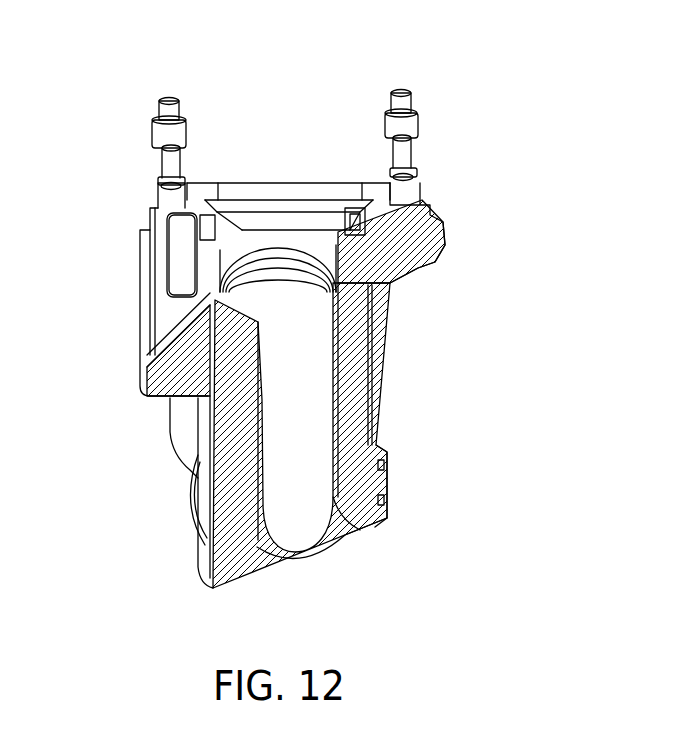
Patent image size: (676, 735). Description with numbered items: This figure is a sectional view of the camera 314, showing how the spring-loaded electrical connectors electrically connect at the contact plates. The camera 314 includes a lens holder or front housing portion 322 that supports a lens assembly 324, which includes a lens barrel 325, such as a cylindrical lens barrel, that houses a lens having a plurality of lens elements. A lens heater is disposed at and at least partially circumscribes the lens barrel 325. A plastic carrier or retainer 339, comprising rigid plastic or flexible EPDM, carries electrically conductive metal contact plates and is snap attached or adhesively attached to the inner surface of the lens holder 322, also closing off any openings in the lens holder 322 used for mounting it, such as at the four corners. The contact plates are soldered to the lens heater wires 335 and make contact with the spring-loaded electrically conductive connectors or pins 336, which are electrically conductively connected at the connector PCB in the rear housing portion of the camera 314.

The camera 314 is at (322, 328).
The lens holder 322 is at (319, 289).
The lens assembly 324 is at (373, 530).
The lens barrel 325 is at (243, 436).
The lens heater wires 335 is at (350, 245).
The spring-loaded electrically conductive connectors 336 is at (150, 116).
The carrier 339 is at (172, 302).